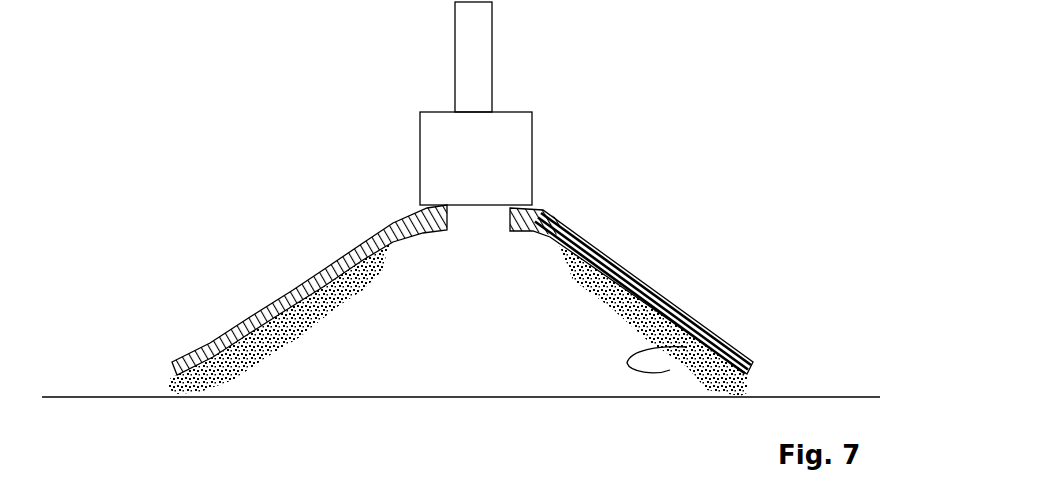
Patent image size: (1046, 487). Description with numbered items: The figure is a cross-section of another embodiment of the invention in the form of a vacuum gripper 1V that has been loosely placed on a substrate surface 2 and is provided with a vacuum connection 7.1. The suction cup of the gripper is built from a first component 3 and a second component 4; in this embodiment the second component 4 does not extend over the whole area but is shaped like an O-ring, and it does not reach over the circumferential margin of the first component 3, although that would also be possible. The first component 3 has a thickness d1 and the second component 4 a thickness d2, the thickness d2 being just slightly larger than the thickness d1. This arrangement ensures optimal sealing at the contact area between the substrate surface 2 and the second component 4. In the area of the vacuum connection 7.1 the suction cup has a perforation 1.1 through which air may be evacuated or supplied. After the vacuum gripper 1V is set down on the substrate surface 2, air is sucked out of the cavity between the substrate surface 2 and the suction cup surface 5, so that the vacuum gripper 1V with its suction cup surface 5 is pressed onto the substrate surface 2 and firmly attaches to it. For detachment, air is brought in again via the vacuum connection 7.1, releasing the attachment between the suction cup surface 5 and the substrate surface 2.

The vacuum gripper 1V is at (230, 151).
The perforation 1.1 is at (471, 228).
The substrate surface 2 is at (802, 396).
The first component 3 is at (586, 237).
The second component 4 is at (643, 293).
The suction cup surface 5 is at (700, 340).
The vacuum connection 7.1 is at (565, 113).
The thickness of the first component d1 is at (332, 373).
The thickness of the second component d2 is at (397, 358).